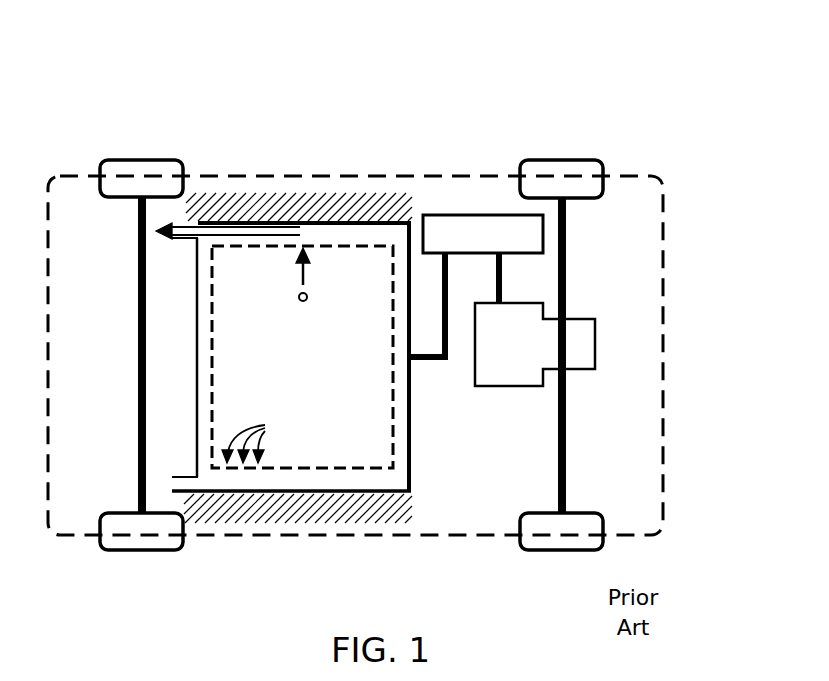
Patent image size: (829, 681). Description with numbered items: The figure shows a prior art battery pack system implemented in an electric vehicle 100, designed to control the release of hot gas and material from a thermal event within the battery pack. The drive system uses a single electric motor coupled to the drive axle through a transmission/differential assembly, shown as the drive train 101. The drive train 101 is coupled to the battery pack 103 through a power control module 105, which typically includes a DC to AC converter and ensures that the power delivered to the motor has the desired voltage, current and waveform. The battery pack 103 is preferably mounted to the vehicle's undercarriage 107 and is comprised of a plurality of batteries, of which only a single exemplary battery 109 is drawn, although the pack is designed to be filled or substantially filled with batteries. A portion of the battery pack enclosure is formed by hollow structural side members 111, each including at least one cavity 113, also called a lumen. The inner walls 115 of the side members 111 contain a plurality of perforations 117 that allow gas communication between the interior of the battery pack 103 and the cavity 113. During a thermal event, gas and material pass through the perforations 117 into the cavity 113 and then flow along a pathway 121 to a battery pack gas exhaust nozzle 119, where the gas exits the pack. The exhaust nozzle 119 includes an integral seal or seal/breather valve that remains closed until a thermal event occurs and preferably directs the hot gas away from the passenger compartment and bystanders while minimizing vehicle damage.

The electric vehicle 100 is at (126, 80).
The drive train 101 is at (508, 303).
The battery pack 103 is at (283, 370).
The power control module 105 is at (445, 213).
The undercarriage 107 is at (242, 207).
The battery 109 is at (307, 297).
The side members 111 is at (348, 215).
The cavity 113 is at (400, 435).
The inner walls 115 is at (308, 468).
The perforations 117 is at (105, 370).
The battery pack gas exhaust nozzle 119 is at (185, 238).
The pathway 121 is at (300, 285).